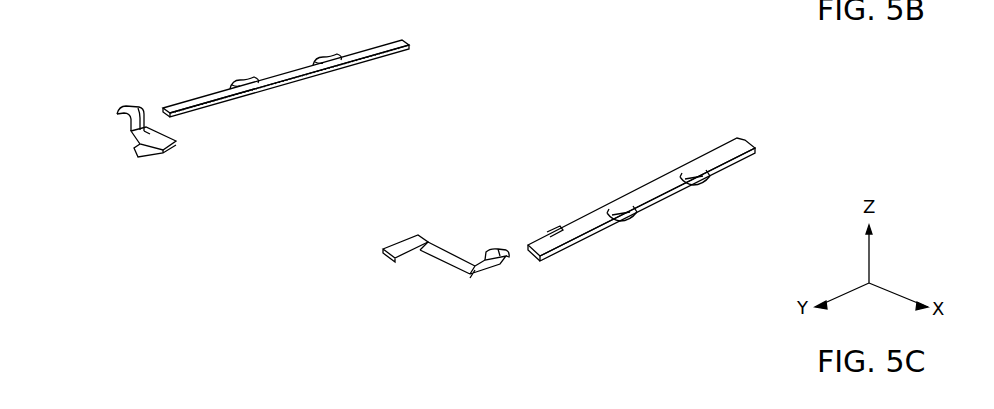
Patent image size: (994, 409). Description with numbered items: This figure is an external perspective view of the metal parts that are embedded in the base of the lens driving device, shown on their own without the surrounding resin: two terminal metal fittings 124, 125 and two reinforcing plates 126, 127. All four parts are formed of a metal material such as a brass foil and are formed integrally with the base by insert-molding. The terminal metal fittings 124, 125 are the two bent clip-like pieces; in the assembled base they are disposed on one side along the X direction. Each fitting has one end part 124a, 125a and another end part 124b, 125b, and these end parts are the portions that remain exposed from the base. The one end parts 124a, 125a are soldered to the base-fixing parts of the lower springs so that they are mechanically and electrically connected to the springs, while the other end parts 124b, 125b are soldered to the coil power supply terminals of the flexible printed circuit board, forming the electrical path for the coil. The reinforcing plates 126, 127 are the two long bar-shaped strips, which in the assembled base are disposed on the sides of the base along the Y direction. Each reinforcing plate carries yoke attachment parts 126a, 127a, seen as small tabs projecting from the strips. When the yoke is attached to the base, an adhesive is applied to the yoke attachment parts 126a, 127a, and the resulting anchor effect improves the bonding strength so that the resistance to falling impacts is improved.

The terminal metal fitting 124 is at (406, 244).
The one end part 124a is at (497, 249).
The another end part 124b is at (382, 254).
The terminal metal fitting 125 is at (111, 134).
The one end part 125a is at (127, 108).
The another end part 125b is at (128, 133).
The reinforcing plate 126 is at (630, 203).
The yoke attachment part 126a is at (712, 183).
The reinforcing plate 127 is at (270, 78).
The yoke attachment part 127a is at (240, 82).